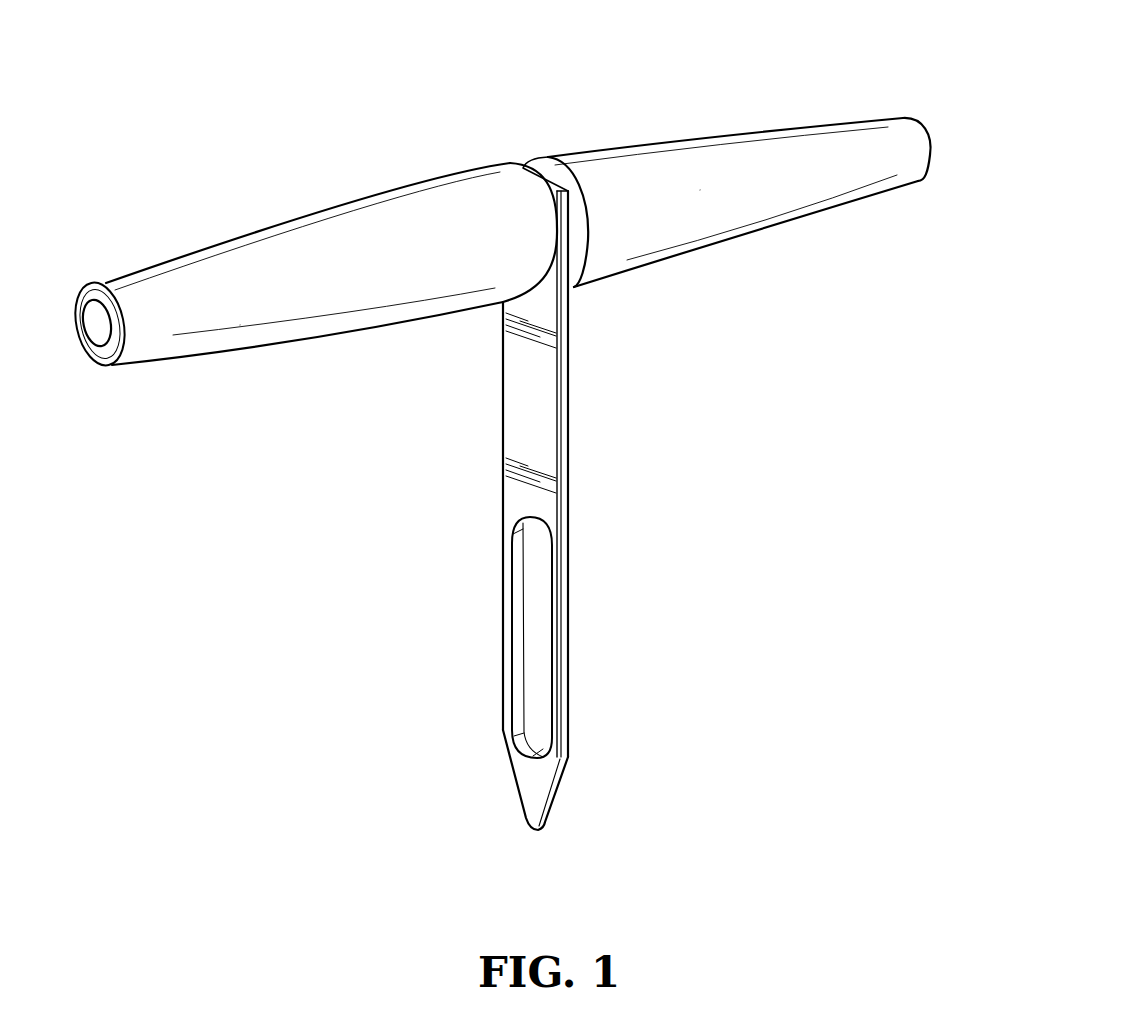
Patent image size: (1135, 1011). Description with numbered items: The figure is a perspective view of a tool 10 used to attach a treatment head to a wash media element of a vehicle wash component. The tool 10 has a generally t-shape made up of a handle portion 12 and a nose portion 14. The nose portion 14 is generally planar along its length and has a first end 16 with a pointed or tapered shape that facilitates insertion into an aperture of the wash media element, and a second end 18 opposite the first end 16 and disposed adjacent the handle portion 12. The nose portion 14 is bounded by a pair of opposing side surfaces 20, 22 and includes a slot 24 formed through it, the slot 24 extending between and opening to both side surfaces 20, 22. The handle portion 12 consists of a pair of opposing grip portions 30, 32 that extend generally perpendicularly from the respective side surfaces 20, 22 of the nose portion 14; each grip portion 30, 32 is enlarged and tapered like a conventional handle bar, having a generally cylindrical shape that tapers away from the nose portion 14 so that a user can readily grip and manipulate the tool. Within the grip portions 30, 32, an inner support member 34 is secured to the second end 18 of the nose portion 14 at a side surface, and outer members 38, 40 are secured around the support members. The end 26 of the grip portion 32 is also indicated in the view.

The tool 10 is at (604, 106).
The handle portion 12 is at (755, 130).
The nose portion 14 is at (569, 500).
The first end 16 is at (563, 790).
The second end 18 is at (553, 187).
The side surface 20 is at (515, 443).
The side surface 22 is at (570, 415).
The slot 24 is at (518, 670).
The end of second handle portion 26 is at (932, 148).
The grip portion 30 is at (287, 257).
The grip portion 32 is at (820, 180).
The inner support member 34 is at (88, 322).
The outer member 38 is at (398, 220).
The outer member 40 is at (660, 168).